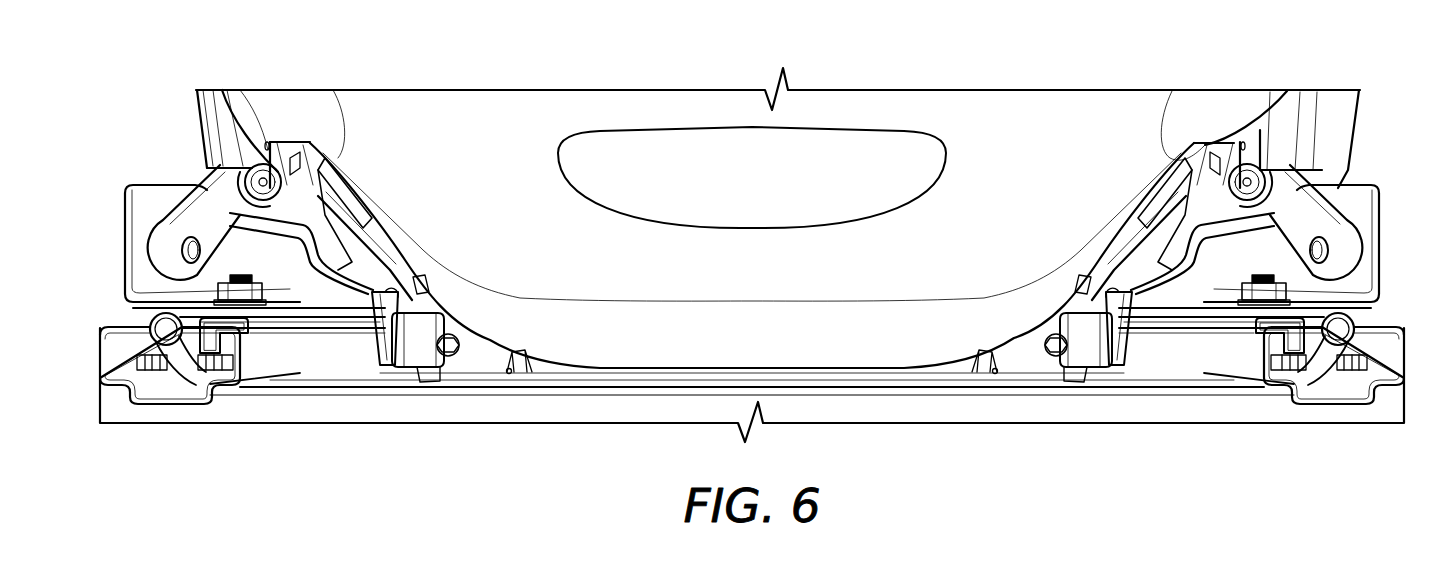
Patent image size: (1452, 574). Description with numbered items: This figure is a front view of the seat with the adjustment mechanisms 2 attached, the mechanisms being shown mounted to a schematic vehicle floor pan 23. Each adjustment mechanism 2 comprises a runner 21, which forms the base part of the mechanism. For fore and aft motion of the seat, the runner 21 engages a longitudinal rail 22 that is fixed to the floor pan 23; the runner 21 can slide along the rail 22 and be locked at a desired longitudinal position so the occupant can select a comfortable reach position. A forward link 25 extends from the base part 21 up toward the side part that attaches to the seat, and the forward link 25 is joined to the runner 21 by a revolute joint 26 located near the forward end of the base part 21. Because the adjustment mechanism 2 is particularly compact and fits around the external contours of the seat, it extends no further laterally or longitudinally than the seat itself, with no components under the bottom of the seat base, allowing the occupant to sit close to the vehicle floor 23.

The adjustment mechanism 2 is at (627, 104).
The runner 21 is at (128, 267).
The longitudinal rail 22 is at (160, 385).
The floor pan 23 is at (947, 413).
The forward link 25 is at (200, 197).
The revolute joint 26 is at (163, 243).